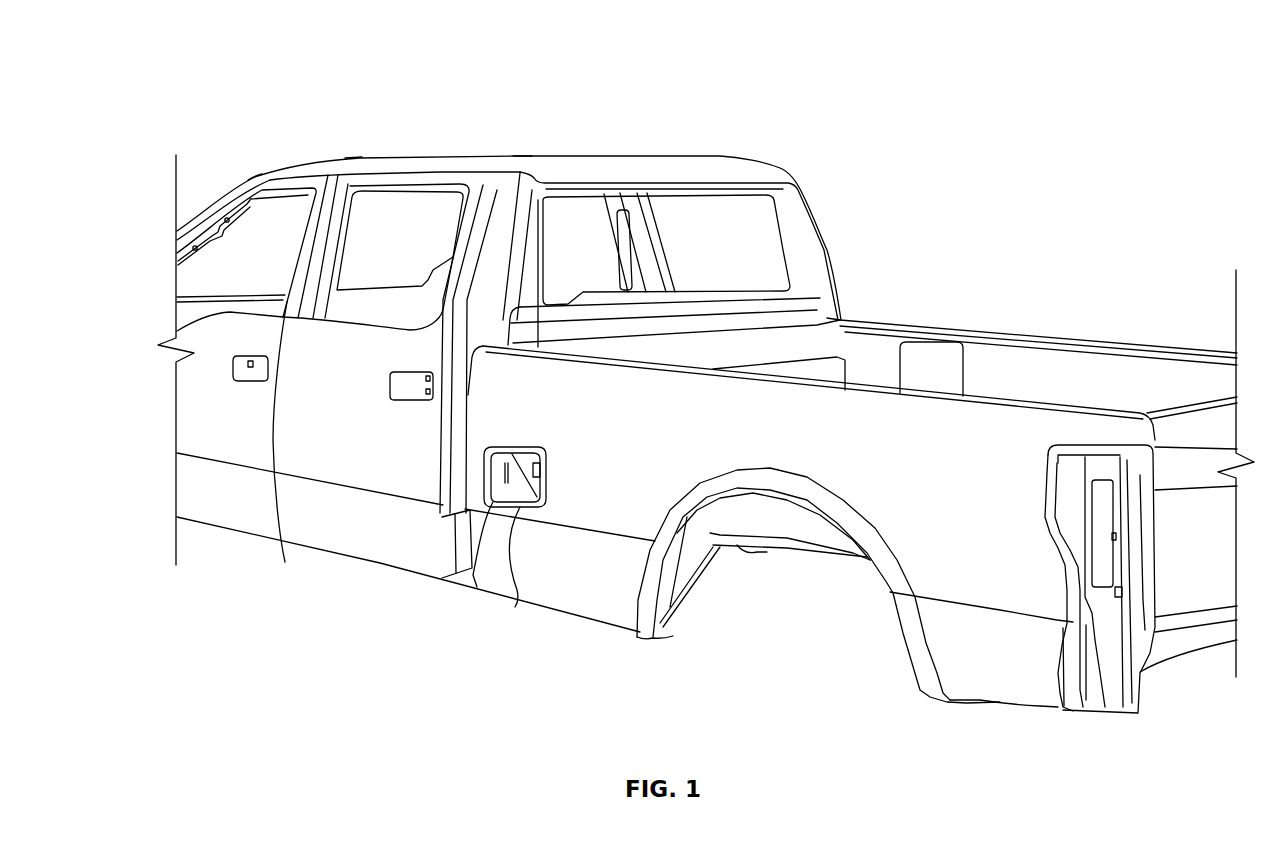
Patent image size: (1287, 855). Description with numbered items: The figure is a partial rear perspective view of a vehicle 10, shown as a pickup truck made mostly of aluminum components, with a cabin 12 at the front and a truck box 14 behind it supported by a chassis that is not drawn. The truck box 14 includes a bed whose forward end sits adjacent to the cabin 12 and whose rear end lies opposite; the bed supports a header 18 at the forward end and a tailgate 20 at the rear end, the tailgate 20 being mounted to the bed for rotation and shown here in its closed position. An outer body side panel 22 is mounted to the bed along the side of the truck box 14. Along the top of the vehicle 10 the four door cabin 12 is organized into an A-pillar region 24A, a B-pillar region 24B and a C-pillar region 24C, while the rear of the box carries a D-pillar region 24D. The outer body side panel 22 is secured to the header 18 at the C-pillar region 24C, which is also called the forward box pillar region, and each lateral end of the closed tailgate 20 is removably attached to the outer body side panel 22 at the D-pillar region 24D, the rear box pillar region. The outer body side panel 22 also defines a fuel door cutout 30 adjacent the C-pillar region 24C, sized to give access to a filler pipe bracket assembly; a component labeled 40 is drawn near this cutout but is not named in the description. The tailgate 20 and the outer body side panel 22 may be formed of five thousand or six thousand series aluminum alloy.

The vehicle 10 is at (252, 84).
The cabin 12 is at (434, 157).
The truck box 14 is at (938, 317).
The header 18 is at (803, 342).
The tailgate 20 is at (1190, 592).
The outer body side panel 22 is at (583, 563).
The A-pillar region 24A is at (249, 166).
The B-pillar region 24B is at (350, 150).
The C-pillar region 24C is at (524, 150).
The D-pillar region 24D is at (1079, 720).
The fuel door cutout 30 is at (478, 587).
The filler hose 40 is at (518, 597).